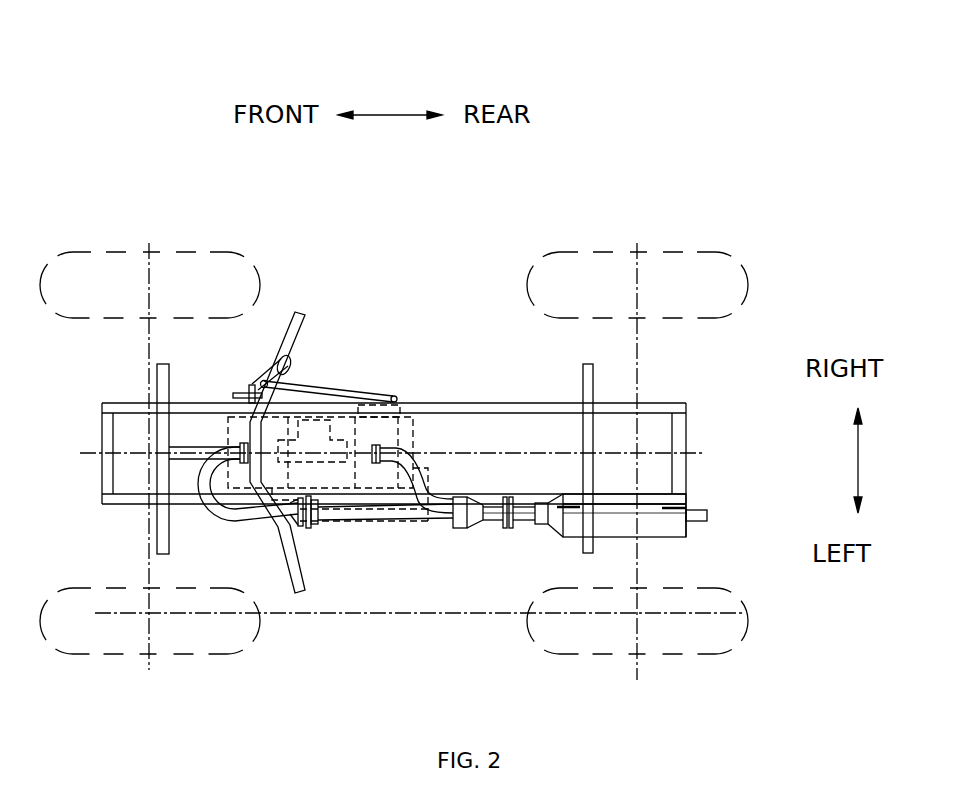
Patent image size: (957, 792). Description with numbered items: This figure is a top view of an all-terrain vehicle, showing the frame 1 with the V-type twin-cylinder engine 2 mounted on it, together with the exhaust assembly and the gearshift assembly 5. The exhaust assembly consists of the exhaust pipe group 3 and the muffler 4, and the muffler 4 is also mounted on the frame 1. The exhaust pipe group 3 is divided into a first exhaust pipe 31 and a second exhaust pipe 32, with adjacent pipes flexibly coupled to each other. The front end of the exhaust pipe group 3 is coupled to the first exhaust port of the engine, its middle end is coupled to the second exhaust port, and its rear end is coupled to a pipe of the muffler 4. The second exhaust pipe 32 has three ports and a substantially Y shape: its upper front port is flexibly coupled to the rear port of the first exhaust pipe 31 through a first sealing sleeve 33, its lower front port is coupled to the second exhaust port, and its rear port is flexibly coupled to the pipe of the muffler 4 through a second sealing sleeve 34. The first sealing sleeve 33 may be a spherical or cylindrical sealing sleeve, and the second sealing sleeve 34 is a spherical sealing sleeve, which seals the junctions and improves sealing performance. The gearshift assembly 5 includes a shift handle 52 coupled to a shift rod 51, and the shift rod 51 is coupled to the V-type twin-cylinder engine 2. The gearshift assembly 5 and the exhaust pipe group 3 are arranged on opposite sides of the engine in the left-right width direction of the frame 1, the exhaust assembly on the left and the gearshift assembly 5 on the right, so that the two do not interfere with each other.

The frame 1 is at (112, 410).
The V-type twin-cylinder engine 2 is at (372, 431).
The exhaust pipe group 3 is at (330, 529).
The first exhaust pipe 31 is at (241, 511).
The second exhaust pipe 32 is at (429, 523).
The first sealing sleeve 33 is at (306, 527).
The second sealing sleeve 34 is at (508, 530).
The muffler 4 is at (672, 526).
The gearshift assembly 5 is at (402, 331).
The shift rod 51 is at (335, 389).
The shift handle 52 is at (288, 362).